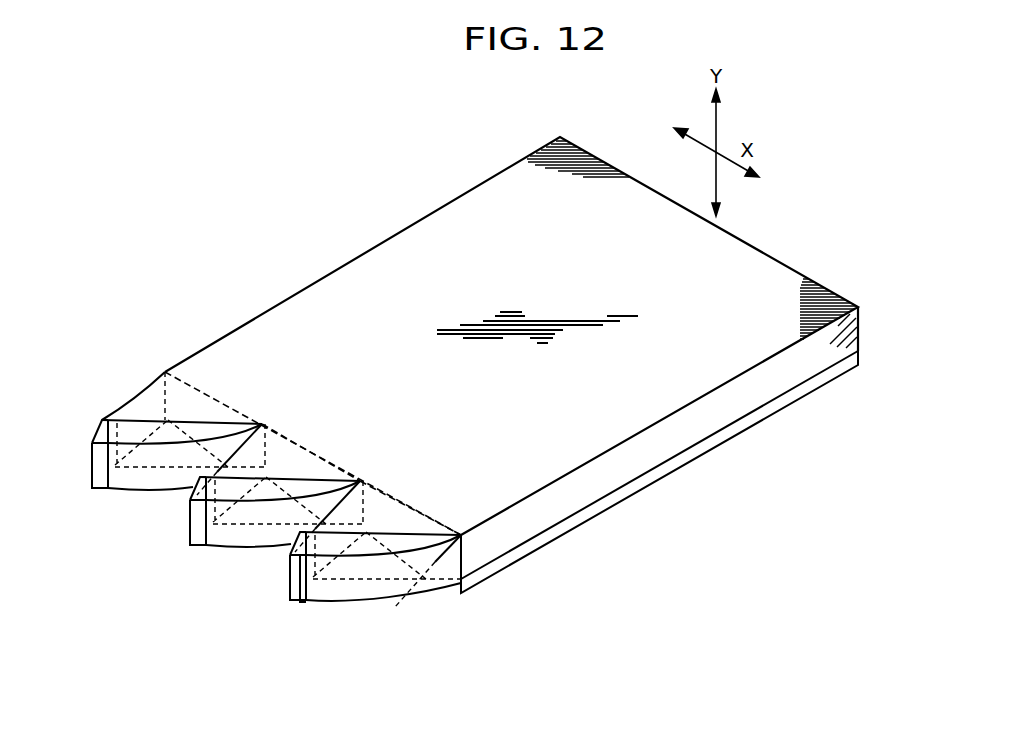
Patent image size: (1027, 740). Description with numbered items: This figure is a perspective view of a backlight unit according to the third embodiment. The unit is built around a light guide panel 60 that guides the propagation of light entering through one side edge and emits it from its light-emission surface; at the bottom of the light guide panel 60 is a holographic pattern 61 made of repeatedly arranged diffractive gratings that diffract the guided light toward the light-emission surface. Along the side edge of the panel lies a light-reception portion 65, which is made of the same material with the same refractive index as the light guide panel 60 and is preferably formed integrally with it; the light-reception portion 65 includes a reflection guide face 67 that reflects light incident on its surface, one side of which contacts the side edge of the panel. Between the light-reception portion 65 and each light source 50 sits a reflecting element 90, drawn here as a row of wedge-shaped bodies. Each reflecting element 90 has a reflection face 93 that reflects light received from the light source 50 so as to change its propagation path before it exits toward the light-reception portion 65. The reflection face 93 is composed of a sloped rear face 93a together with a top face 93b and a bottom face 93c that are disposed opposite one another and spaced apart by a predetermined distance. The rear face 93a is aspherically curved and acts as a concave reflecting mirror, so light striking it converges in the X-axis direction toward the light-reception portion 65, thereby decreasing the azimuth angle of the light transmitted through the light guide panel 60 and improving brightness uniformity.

The light guide panel 60 is at (777, 278).
The holographic pattern 61 is at (826, 380).
The light-reception portion 65 is at (392, 516).
The reflection guide face 67 is at (368, 510).
The light source 50 is at (297, 560).
The reflecting element 90 is at (322, 610).
The reflection face 93 is at (396, 616).
The rear face 93a is at (395, 587).
The top face 93b is at (334, 598).
The bottom face 93c is at (383, 615).